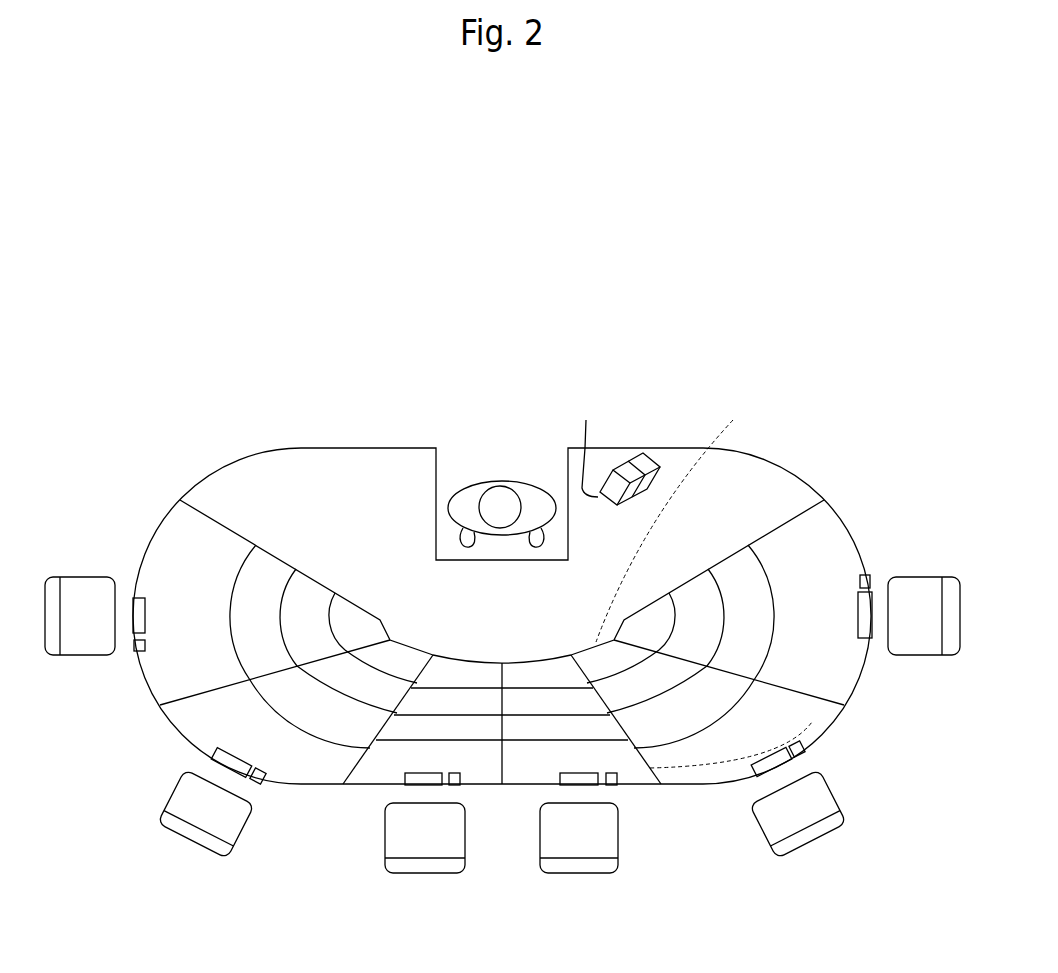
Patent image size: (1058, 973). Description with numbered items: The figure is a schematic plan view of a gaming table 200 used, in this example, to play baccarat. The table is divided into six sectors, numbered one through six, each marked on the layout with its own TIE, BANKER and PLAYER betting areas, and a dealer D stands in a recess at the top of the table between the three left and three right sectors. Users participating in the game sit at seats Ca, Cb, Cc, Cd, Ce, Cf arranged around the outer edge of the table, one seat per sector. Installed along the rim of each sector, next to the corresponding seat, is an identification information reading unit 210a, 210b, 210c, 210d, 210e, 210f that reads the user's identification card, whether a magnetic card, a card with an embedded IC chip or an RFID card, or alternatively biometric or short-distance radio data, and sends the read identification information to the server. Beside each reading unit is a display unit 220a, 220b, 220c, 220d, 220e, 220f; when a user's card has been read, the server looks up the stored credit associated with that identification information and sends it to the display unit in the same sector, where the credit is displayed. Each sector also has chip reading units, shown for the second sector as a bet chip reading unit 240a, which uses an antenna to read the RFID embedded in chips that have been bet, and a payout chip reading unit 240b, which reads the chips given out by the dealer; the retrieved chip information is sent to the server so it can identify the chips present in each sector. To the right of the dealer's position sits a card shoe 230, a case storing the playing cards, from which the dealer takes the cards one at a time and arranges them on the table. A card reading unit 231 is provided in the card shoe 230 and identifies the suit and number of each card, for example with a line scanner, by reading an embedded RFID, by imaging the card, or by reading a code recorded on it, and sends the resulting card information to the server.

The gaming table 200 is at (356, 430).
The identification information reading unit 210a is at (867, 575).
The identification information reading unit 210b is at (806, 745).
The identification information reading unit 210c is at (612, 786).
The identification information reading unit 210d is at (456, 786).
The identification information reading unit 210e is at (260, 782).
The identification information reading unit 210f is at (140, 652).
The display unit 220a is at (868, 640).
The display unit 220b is at (792, 765).
The display unit 220c is at (570, 779).
The display unit 220d is at (405, 780).
The display unit 220e is at (212, 762).
The display unit 220f is at (132, 597).
The card shoe 230 is at (636, 453).
The card reading unit 231 is at (585, 448).
The bet chip reading unit 240a is at (674, 522).
The payout chip reading unit 240b is at (693, 770).
The dealer D is at (483, 484).
The seat Ca is at (930, 577).
The seat Cb is at (809, 848).
The seat Cc is at (578, 873).
The seat Cd is at (420, 873).
The seat Ce is at (195, 848).
The seat Cf is at (78, 656).